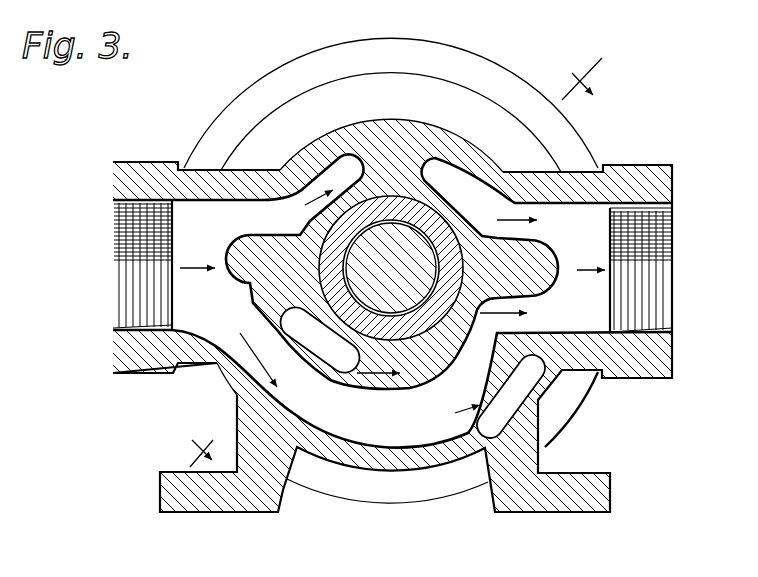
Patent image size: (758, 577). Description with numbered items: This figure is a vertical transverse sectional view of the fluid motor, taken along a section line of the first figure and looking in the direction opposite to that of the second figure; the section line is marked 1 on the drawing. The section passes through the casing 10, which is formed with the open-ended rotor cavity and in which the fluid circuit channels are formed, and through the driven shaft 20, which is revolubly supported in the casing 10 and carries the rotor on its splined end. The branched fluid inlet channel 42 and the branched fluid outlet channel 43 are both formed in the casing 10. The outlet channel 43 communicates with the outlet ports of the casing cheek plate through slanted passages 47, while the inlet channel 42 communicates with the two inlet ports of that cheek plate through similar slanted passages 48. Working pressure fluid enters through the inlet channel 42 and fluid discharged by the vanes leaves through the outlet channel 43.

The section line 1 is at (390, 260).
The casing 10 is at (483, 73).
The driven shaft 20 is at (379, 264).
The fluid inlet channel 42 is at (213, 223).
The fluid outlet channel 43 is at (520, 190).
The slanted passages 47 is at (447, 170).
The slanted passages 48 is at (337, 158).